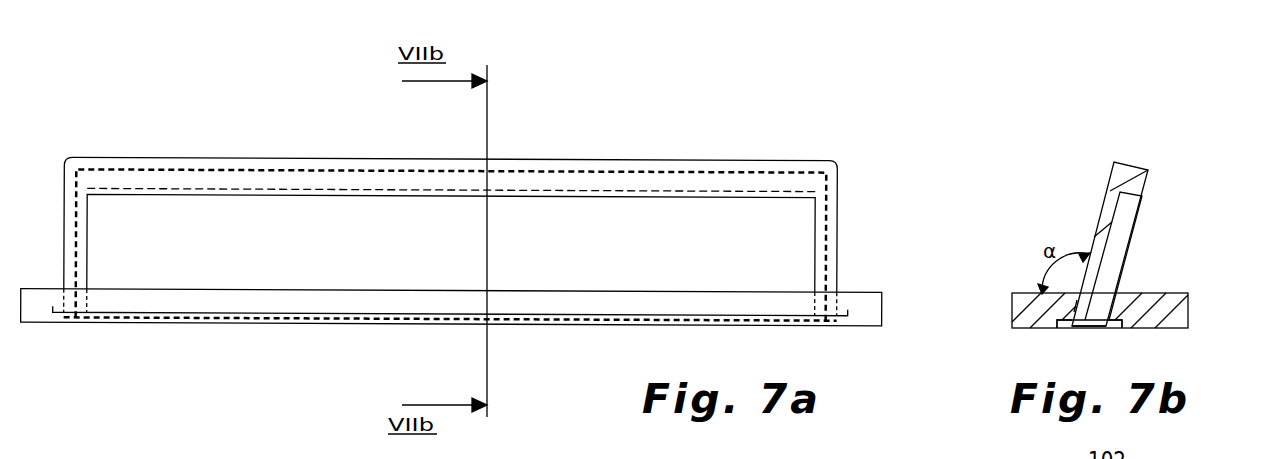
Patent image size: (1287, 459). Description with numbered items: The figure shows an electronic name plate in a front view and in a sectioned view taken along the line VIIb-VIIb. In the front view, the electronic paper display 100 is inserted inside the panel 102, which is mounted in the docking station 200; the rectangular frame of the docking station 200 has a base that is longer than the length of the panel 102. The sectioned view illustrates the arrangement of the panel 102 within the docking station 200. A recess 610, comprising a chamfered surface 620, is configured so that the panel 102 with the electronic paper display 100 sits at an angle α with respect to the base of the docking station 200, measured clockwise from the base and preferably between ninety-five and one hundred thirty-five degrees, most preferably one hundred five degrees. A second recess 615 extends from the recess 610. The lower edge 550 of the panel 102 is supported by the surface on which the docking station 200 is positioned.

In FIG. 7a, the electronic paper display 100 is at (720, 194).
In FIG. 7b, the electronic paper display 100 is at (1128, 245).
In FIG. 7a, the panel 102 is at (616, 159).
In FIG. 7b, the panel 102 is at (1125, 162).
In FIG. 7a, the docking station 200 is at (857, 291).
In FIG. 7b, the docking station 200 is at (1188, 318).
In FIG. 7b, the lower edge 550 is at (1097, 336).
In FIG. 7b, the recess 610 is at (1122, 317).
In FIG. 7b, the second recess 615 is at (1078, 323).
In FIG. 7b, the chamfered surface 620 is at (1062, 306).